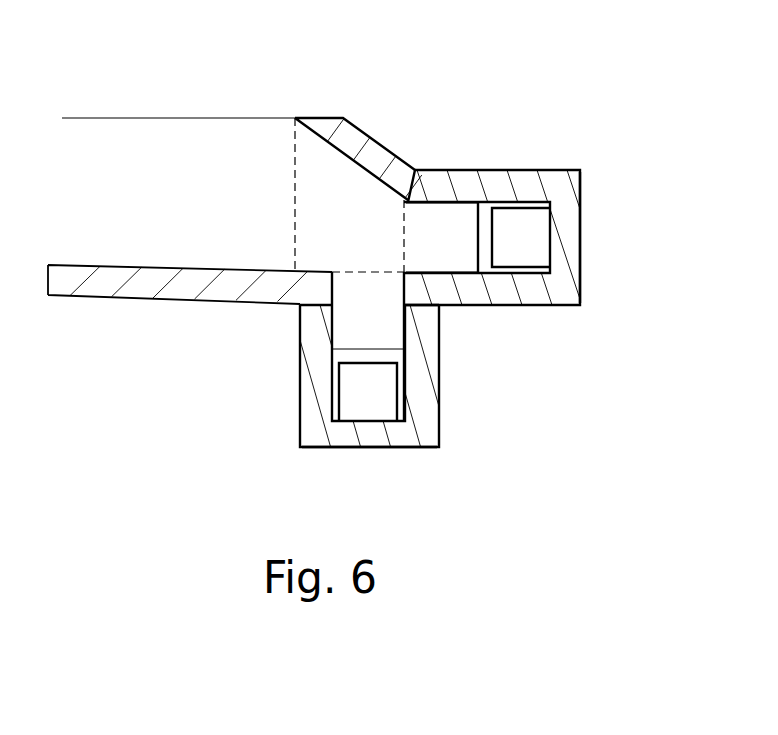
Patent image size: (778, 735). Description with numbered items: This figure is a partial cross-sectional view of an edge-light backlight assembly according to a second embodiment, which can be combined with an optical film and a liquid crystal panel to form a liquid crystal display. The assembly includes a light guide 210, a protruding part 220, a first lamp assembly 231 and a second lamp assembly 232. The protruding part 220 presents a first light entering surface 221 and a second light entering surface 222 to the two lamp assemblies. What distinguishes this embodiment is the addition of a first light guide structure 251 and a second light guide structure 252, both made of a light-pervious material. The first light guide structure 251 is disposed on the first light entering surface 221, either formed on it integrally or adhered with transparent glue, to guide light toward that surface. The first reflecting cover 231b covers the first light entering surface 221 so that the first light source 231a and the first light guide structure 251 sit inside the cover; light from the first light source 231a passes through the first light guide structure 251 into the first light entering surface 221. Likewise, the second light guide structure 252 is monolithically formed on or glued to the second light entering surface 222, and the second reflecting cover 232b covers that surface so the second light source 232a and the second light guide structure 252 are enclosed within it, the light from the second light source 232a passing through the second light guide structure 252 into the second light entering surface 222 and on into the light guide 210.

The light guide 210 is at (160, 145).
The protruding part 220 is at (327, 200).
The first light entering surface 221 is at (405, 233).
The second light entering surface 222 is at (358, 272).
The first lamp assembly 231 is at (567, 155).
The first light source 231a is at (517, 240).
The first reflecting cover 231b is at (580, 255).
The second lamp assembly 232 is at (370, 462).
The second light source 232a is at (373, 393).
The second reflecting cover 232b is at (415, 447).
The first light guide structure 251 is at (445, 228).
The second light guide structure 252 is at (357, 320).